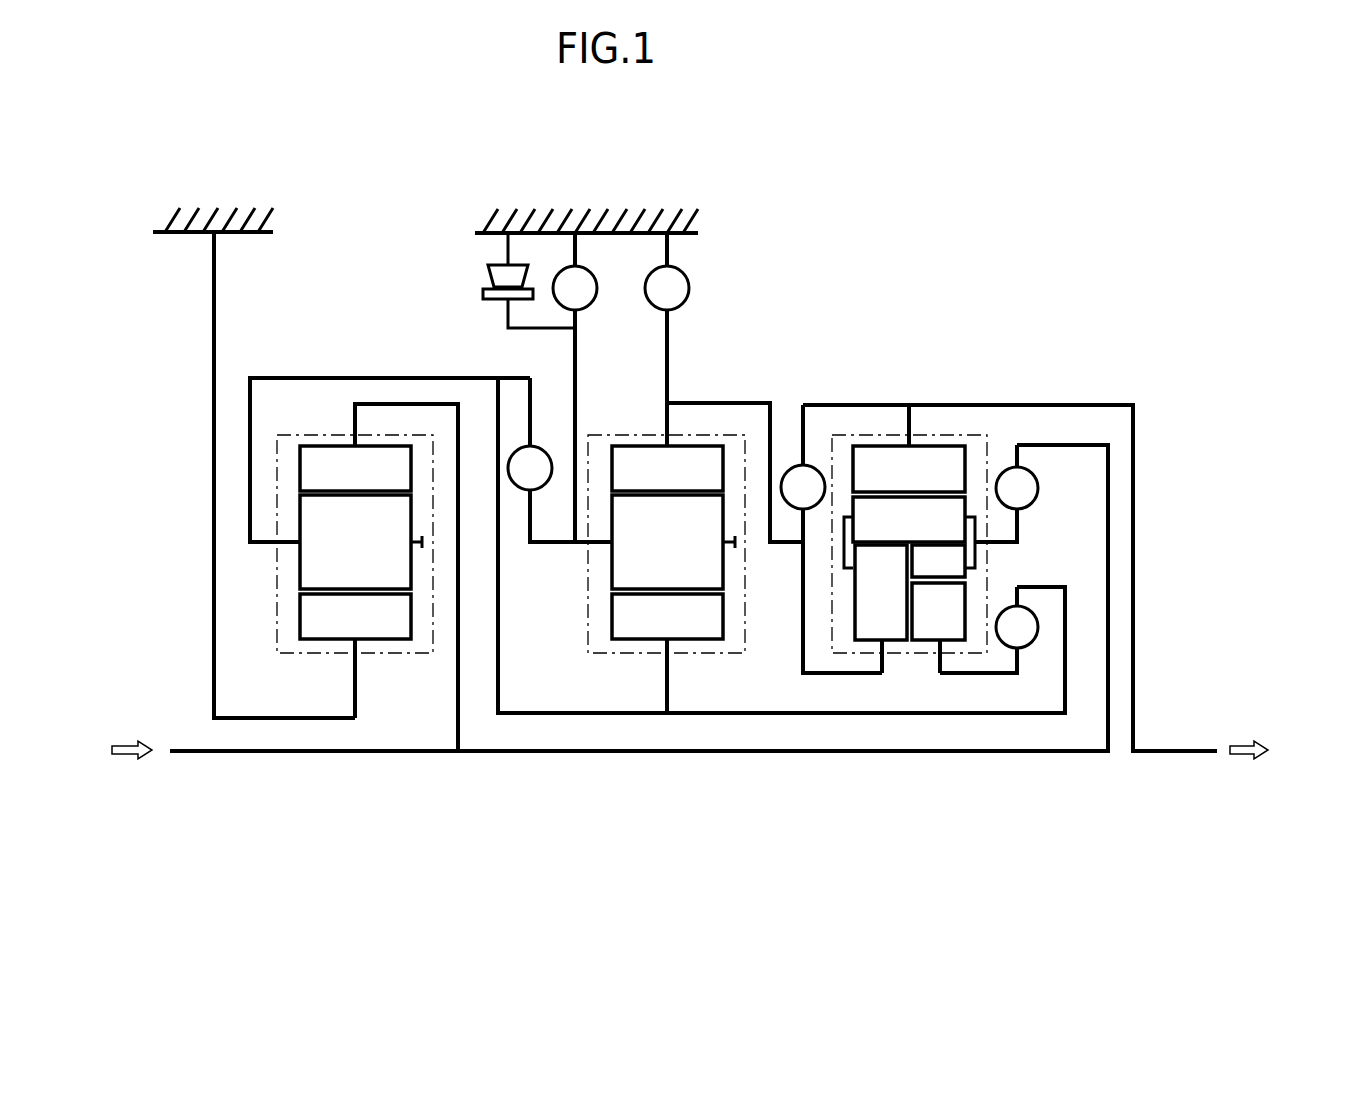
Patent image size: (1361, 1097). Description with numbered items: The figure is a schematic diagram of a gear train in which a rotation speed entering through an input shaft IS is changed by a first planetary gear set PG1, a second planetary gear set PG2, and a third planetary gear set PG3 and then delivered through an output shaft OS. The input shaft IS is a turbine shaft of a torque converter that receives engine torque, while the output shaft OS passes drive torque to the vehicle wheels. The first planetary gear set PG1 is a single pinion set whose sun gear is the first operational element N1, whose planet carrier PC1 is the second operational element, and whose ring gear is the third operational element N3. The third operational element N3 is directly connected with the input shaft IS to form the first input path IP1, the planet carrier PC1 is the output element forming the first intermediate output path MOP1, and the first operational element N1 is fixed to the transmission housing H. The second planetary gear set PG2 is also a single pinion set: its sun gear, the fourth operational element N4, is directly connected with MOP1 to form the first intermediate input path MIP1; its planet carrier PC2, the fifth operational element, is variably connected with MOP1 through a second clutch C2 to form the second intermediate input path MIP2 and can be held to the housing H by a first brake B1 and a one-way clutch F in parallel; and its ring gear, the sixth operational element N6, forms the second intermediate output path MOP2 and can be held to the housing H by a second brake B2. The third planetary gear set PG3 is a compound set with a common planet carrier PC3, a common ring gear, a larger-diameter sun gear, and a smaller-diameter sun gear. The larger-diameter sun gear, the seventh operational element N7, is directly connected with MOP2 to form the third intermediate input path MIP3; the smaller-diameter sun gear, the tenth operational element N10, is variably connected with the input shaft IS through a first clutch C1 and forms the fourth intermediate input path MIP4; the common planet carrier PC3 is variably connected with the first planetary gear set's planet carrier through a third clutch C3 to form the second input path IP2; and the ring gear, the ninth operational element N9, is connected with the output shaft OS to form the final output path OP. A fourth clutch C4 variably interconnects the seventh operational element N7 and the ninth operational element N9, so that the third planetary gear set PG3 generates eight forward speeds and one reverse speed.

The transmission housing H is at (241, 206).
The one-way clutch F is at (520, 280).
The first brake B1 is at (575, 387).
The second brake B2 is at (667, 339).
The first clutch C1 is at (989, 630).
The second clutch C2 is at (560, 460).
The third clutch C3 is at (1006, 493).
The fourth clutch C4 is at (831, 539).
The input shaft IS is at (198, 754).
The output shaft OS is at (1168, 754).
The first planetary gear set PG1 is at (386, 657).
The second planetary gear set PG2 is at (700, 657).
The third planetary gear set PG3 is at (912, 657).
The first operational element N1 is at (355, 656).
The planet carrier PC1 is at (260, 545).
The third operational element N3 is at (355, 468).
The fourth operational element N4 is at (667, 616).
The planet carrier PC2 is at (565, 546).
The sixth operational element N6 is at (667, 468).
The seventh operational element N7 is at (881, 592).
The common planet carrier PC3 is at (997, 547).
The ninth operational element N9 is at (909, 469).
The tenth operational element N10 is at (938, 611).
The first input path IP1 is at (470, 640).
The second input path IP2 is at (1072, 452).
The first intermediate input path MIP1 is at (654, 681).
The second intermediate input path MIP2 is at (503, 363).
The third intermediate input path MIP3 is at (1033, 653).
The fourth intermediate input path MIP4 is at (788, 652).
The first intermediate output path MOP1 is at (380, 363).
The second intermediate output path MOP2 is at (740, 383).
The final output path OP is at (1100, 383).